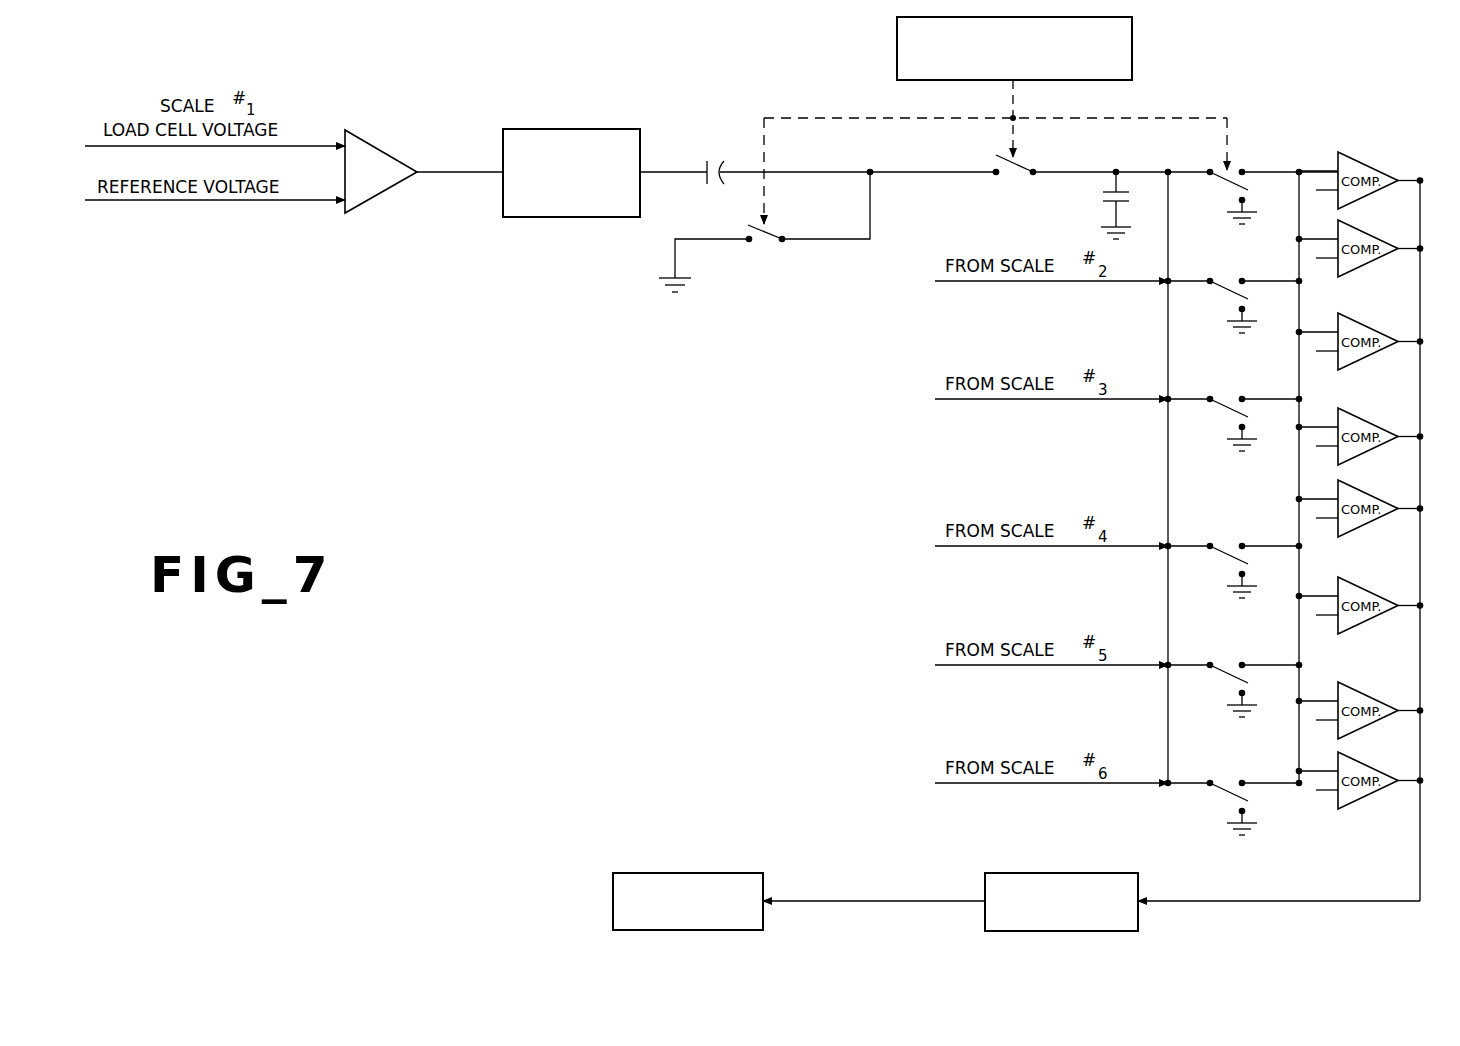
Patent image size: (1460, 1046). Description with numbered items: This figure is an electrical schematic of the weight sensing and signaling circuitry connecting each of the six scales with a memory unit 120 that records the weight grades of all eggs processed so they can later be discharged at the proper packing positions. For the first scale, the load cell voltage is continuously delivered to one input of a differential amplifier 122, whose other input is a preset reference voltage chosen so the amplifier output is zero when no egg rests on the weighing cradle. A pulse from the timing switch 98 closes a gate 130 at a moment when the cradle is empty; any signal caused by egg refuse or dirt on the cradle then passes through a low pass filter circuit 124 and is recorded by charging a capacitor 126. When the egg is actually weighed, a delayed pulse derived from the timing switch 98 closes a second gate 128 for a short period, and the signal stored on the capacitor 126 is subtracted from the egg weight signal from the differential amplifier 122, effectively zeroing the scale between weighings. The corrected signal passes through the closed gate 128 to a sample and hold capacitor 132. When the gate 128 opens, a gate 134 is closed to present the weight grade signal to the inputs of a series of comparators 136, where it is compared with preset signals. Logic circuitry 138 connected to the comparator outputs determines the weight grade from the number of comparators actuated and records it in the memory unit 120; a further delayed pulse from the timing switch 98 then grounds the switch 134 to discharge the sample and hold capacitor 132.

The timing switch 98 is at (897, 46).
The memory unit 120 is at (613, 901).
The differential amplifier 122 is at (370, 141).
The low pass filter circuit 124 is at (558, 132).
The capacitor 126 is at (708, 183).
The second gate 128 is at (1021, 163).
The gate 130 is at (772, 229).
The sample and hold capacitor 132 is at (1104, 200).
The gate 134 is at (1229, 185).
The comparators 136 is at (1356, 197).
The logic circuitry 138 is at (1132, 874).